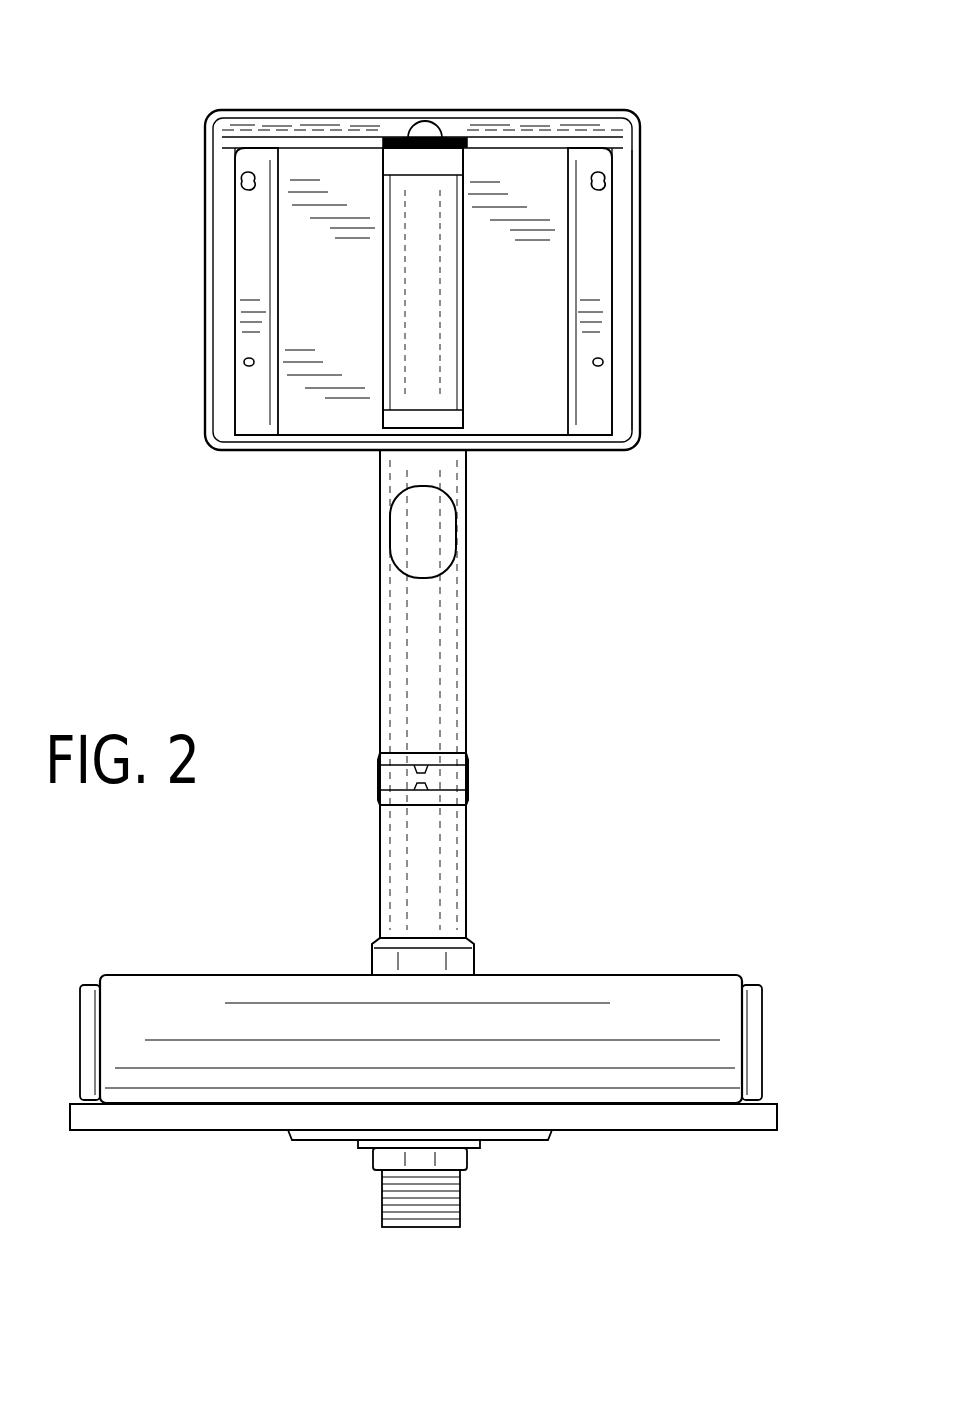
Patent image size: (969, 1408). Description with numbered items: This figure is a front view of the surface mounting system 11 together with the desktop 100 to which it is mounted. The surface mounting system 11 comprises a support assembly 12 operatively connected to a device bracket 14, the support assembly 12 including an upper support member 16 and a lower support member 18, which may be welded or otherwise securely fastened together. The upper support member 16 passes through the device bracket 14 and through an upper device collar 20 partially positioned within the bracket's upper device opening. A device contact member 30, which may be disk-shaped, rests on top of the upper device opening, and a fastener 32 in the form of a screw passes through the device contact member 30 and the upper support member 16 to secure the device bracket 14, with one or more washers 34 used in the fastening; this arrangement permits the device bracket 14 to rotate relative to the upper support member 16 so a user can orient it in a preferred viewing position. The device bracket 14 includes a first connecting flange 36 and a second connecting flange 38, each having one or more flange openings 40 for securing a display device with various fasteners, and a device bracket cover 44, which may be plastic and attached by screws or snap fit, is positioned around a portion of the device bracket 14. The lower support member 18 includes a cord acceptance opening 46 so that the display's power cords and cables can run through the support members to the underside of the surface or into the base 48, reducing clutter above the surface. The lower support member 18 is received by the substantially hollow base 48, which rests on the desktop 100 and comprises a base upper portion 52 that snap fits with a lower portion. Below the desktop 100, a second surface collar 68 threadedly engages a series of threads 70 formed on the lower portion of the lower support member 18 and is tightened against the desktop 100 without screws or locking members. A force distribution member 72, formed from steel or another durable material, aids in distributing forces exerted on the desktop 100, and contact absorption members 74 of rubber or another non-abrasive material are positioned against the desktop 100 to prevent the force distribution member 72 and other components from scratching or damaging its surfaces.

The surface mounting system 11 is at (428, 75).
The support assembly 12 is at (466, 635).
The device bracket 14 is at (304, 418).
The upper support member 16 is at (450, 378).
The lower support member 18 is at (398, 622).
The upper device collar 20 is at (378, 116).
The device contact member 30 is at (402, 140).
The fastener 32 is at (430, 125).
The washer 34 is at (443, 134).
The first connecting flange 36 is at (250, 308).
The second connecting flange 38 is at (598, 292).
The flange opening 40 is at (243, 182).
The device bracket cover 44 is at (642, 148).
The cord acceptance opening 46 is at (400, 536).
The base 48 is at (503, 975).
The base upper portion 52 is at (652, 975).
The second surface collar 68 is at (468, 1160).
The threads 70 is at (385, 1196).
The force distribution member 72 is at (332, 1140).
The contact absorption member 74 is at (545, 1141).
The desktop 100 is at (168, 1132).